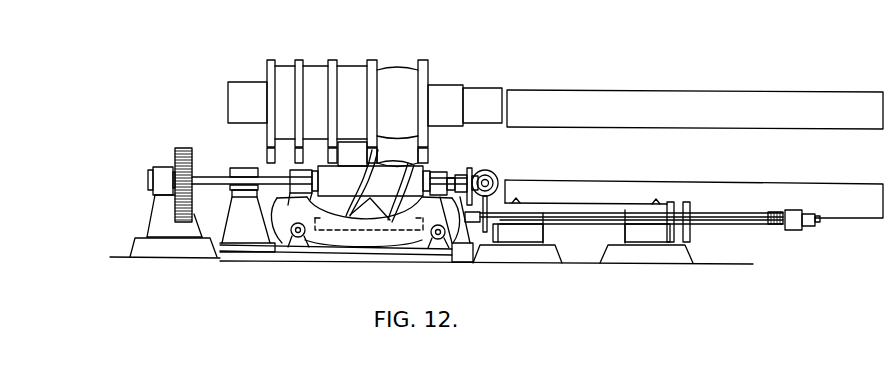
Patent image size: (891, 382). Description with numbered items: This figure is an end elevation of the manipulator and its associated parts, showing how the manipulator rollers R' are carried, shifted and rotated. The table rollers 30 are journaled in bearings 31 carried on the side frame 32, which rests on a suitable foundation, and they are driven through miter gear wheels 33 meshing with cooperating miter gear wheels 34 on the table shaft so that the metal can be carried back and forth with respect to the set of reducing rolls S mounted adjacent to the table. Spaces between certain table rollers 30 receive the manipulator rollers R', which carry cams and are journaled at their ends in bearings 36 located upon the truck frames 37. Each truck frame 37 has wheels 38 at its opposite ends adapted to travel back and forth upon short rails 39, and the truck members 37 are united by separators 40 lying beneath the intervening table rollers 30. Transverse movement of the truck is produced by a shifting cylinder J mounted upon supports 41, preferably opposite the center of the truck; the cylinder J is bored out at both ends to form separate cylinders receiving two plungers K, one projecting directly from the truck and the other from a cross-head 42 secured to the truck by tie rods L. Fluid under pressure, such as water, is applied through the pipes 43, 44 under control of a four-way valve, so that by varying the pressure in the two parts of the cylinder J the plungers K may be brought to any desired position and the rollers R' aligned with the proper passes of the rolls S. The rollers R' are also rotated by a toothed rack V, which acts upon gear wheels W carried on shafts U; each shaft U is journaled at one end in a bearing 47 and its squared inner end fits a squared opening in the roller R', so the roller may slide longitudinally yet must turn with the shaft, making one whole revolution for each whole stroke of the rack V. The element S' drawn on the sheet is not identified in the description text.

The reducing rolls S is at (546, 124).
The roller section S' is at (352, 154).
The manipulator rollers R' is at (371, 182).
The bearing 47 is at (152, 168).
The gear wheels W is at (177, 153).
The shafts U is at (200, 177).
The toothed rack V is at (170, 218).
The table rollers 30 is at (270, 170).
The bearings 31 is at (243, 169).
The side frame 32 is at (230, 226).
The bearings 36 is at (300, 181).
The truck frames 37 is at (348, 244).
The wheels 38 is at (292, 246).
The short rails 39 is at (233, 252).
The separators 40 is at (398, 223).
The miter gear wheels 33 is at (468, 168).
The miter gear wheels 34 is at (497, 177).
The pipe 43 is at (518, 202).
The pipe 44 is at (654, 203).
The plungers K is at (710, 215).
The tie rods L is at (710, 226).
The cross-head 42 is at (797, 230).
The shifting cylinder J is at (562, 229).
The supports 41 is at (560, 253).